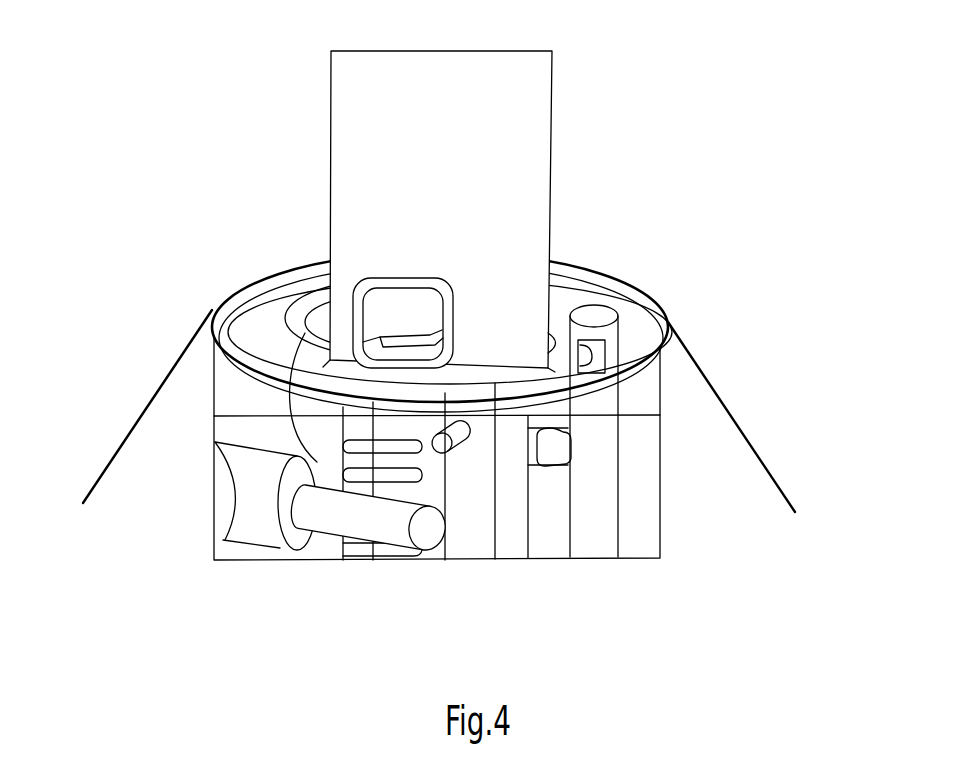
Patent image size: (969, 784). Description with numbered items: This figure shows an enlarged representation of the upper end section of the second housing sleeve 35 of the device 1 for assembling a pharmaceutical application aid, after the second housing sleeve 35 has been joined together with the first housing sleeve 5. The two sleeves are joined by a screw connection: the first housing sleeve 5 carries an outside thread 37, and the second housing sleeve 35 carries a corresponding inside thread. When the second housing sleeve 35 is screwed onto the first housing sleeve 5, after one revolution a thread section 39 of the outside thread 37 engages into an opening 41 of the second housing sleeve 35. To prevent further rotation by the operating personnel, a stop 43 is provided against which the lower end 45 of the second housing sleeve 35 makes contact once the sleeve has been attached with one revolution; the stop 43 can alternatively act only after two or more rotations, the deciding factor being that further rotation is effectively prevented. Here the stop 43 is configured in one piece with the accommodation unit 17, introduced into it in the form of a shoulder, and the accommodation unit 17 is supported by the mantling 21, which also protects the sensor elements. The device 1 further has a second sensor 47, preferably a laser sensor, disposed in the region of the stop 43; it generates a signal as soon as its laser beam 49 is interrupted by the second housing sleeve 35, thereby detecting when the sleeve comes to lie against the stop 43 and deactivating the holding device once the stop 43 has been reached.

The device 1 is at (143, 358).
The first housing sleeve 5 is at (430, 477).
The accommodation unit 17 is at (275, 401).
The mantling 21 is at (697, 438).
The second housing sleeve 35 is at (510, 147).
The outside thread 37 is at (378, 328).
The thread section 39 is at (408, 318).
The opening 41 is at (418, 315).
The stop 43 is at (318, 367).
The lower end 45 is at (500, 416).
The second sensor 47 is at (616, 316).
The laser beam 49 is at (560, 383).